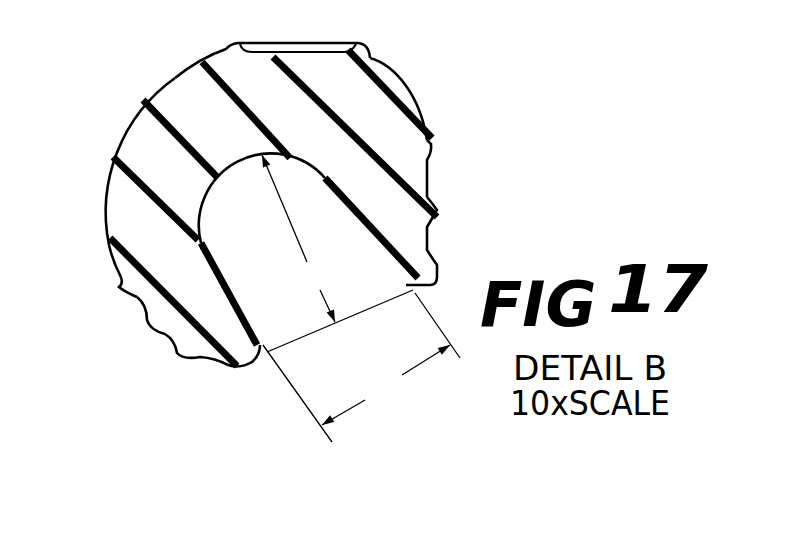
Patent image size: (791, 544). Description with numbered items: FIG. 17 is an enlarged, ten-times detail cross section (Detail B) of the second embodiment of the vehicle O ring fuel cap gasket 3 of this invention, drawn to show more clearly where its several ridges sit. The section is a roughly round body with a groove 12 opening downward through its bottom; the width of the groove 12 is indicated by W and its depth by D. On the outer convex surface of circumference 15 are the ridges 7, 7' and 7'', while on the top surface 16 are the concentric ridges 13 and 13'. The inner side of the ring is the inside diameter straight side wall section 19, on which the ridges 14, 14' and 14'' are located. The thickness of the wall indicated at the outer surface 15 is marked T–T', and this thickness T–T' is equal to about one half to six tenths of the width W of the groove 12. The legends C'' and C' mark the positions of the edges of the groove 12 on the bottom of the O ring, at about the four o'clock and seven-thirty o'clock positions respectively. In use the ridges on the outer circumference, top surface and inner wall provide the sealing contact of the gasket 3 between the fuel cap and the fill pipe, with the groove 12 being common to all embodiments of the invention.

The vehicle O ring fuel cap gasket 3 is at (403, 72).
The ridge on outer circumference 7 is at (100, 274).
The ridge on outer circumference 7' is at (126, 319).
The ridge on outer circumference 7'' is at (173, 356).
The groove 12 is at (266, 284).
The concentric ridge 13 is at (381, 31).
The concentric ridge 13' is at (206, 39).
The ridge on inner circumference 14 is at (464, 147).
The ridge on inner circumference 14' is at (468, 218).
The ridge on inner circumference 14'' is at (465, 258).
The outer convex surface of circumference 15 is at (167, 83).
The top surface 16 is at (288, 50).
The inside diameter straight side wall section 19 is at (427, 180).
The cross section thickness of top of O ring T is at (238, 223).
The cross section thickness of top of O ring T' is at (243, 208).
The depth of groove D is at (298, 238).
The width of groove W is at (361, 366).
The second groove edge C' is at (248, 379).
The first groove edge C'' is at (440, 302).